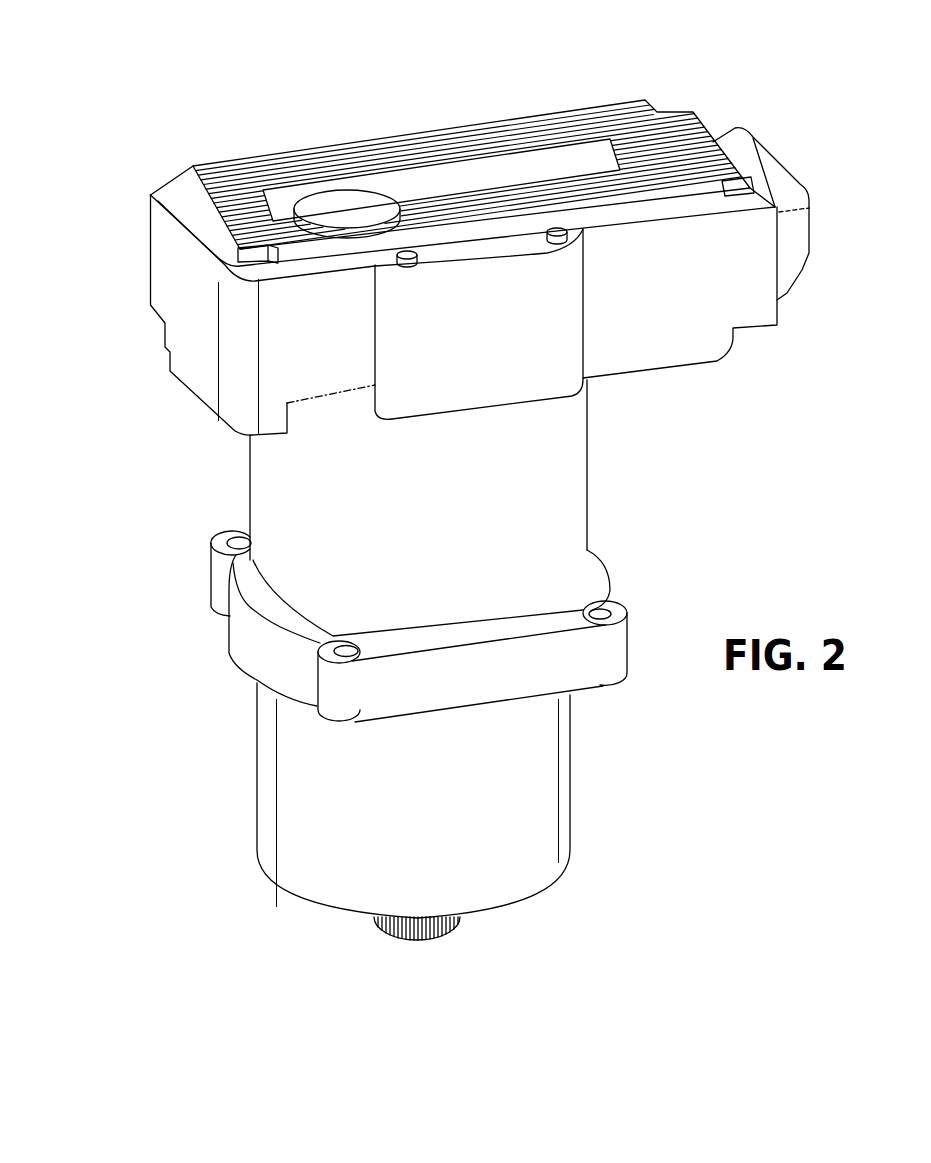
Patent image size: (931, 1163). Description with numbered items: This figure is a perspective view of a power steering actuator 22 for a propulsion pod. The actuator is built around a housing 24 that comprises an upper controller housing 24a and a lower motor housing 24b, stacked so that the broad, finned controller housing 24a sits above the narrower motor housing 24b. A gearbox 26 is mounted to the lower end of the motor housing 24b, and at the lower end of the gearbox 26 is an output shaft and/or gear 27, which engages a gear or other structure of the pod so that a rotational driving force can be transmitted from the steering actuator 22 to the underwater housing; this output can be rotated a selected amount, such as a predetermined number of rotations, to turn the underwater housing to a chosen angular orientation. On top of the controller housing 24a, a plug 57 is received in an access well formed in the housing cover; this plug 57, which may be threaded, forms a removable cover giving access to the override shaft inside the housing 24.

The steering actuator 22 is at (402, 99).
The housing 24 is at (127, 299).
The upper controller housing 24a is at (157, 238).
The lower motor housing 24b is at (288, 487).
The gearbox 26 is at (313, 797).
The output shaft and/or gear 27 is at (437, 930).
The plug 57 is at (342, 206).